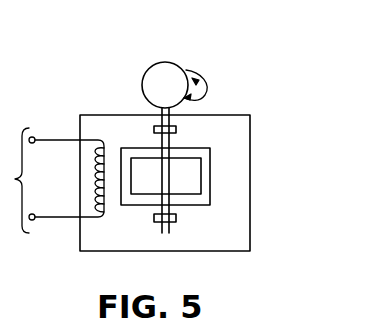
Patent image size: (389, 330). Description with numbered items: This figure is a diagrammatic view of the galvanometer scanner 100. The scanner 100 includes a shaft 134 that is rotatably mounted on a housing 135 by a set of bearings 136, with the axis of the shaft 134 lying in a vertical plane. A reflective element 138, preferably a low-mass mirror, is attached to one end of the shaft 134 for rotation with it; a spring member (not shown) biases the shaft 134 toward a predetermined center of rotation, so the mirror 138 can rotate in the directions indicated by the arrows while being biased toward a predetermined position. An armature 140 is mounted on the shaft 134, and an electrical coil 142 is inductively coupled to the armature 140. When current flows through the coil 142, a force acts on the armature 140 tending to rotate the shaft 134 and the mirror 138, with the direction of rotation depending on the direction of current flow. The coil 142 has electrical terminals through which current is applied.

The galvanometer scanner 100 is at (116, 80).
The shaft 134 is at (171, 180).
The housing 135 is at (251, 133).
The bearings 136 is at (177, 130).
The reflective element 138 is at (150, 62).
The armature 140 is at (210, 195).
The electrical coil 142 is at (99, 139).